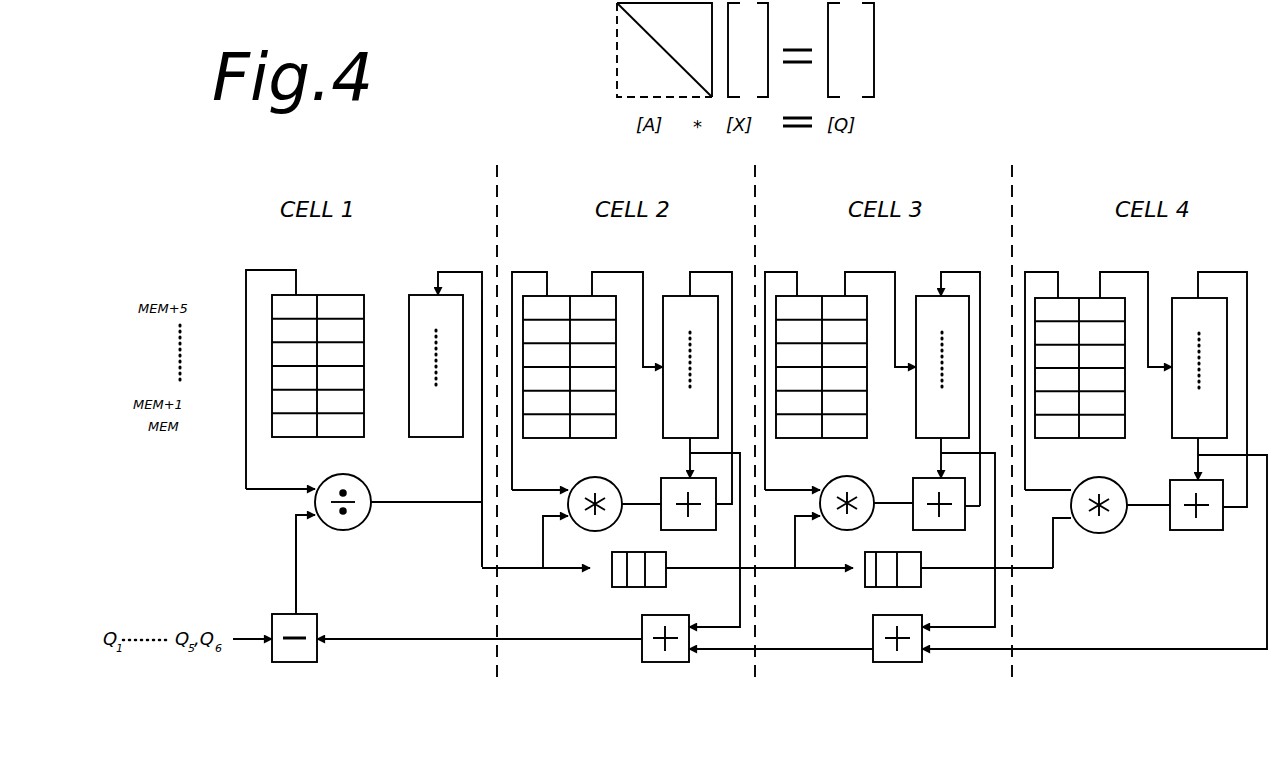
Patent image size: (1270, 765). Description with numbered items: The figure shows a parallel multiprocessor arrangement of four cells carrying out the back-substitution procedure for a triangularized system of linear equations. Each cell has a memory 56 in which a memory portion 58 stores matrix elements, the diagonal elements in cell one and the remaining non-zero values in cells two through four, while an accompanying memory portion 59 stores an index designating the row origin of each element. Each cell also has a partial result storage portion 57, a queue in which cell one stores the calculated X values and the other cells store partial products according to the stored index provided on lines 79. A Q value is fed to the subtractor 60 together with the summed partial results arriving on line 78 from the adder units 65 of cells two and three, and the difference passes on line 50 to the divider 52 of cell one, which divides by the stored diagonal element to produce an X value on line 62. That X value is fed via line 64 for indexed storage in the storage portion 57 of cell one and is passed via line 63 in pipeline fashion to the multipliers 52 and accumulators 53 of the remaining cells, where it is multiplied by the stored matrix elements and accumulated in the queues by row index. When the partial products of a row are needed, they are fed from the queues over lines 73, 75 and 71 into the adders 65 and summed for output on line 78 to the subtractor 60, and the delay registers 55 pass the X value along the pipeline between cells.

The line 50 is at (296, 560).
The divider/multiplier 52 is at (363, 520).
The accumulator 53 is at (661, 492).
The delay register 55 is at (666, 572).
The memory 56 is at (330, 270).
The partial result storage portion 57 is at (420, 295).
The memory portion 58 is at (300, 437).
The memory portion 59 is at (338, 295).
The subtractor 60 is at (317, 625).
The line 62 is at (455, 504).
The line 63 is at (513, 570).
The line 64 is at (482, 463).
The adder unit 65 is at (642, 655).
The line 71 is at (740, 548).
The line 73 is at (1267, 553).
The line 75 is at (995, 548).
The line 78 is at (545, 638).
The line 79 is at (643, 295).